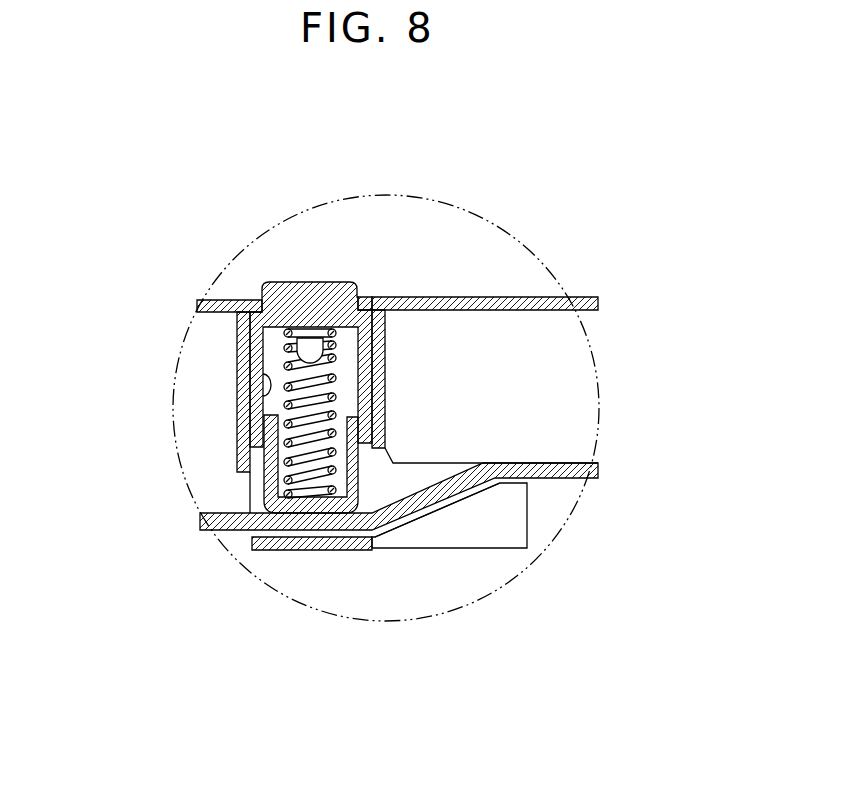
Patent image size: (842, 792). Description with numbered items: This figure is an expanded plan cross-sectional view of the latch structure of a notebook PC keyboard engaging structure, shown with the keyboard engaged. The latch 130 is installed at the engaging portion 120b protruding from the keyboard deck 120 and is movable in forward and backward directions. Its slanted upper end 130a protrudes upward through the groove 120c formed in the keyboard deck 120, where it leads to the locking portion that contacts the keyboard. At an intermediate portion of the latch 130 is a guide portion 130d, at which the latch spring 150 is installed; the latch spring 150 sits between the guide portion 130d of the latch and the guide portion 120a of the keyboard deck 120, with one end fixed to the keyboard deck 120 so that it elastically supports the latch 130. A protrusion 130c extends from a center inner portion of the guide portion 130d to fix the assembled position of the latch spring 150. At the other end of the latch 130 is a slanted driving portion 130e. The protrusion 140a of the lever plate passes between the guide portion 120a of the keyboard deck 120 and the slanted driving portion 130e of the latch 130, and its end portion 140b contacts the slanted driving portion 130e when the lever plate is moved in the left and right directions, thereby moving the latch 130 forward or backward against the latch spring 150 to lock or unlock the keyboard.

The keyboard deck 120 is at (482, 297).
The guide portion of the keyboard deck 120a is at (250, 485).
The engaging portion 120b is at (386, 413).
The groove 120c is at (362, 300).
The latch 130 is at (517, 521).
The slanted upper end 130a is at (331, 282).
The protrusion 130c is at (300, 356).
The guide portion 130d is at (265, 393).
The slanted driving portion 130e is at (408, 525).
The protrusion of the lever plate 140a is at (218, 527).
The end portion 140b is at (372, 532).
The latch spring 150 is at (285, 343).